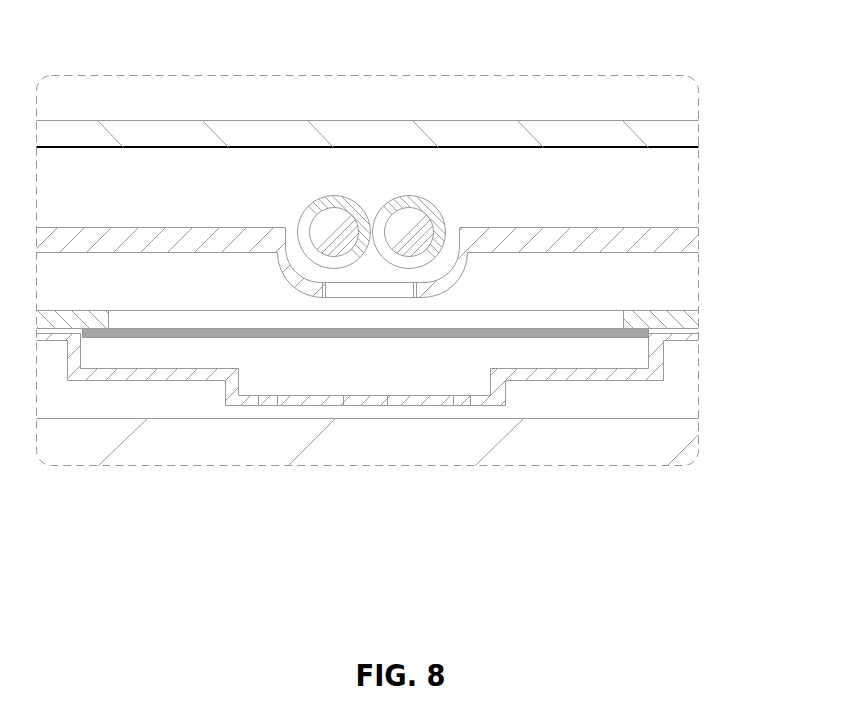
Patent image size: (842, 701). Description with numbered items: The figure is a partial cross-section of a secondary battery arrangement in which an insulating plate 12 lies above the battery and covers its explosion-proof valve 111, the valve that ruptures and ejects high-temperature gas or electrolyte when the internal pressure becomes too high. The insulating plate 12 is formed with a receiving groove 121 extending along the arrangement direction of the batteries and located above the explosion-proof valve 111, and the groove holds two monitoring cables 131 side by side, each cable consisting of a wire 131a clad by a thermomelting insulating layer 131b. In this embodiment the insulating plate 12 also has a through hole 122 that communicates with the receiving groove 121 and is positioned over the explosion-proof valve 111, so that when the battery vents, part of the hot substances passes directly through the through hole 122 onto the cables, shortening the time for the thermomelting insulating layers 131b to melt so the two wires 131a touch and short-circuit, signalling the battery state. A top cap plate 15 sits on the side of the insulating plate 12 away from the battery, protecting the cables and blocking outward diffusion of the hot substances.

The top cap plate 15 is at (577, 135).
The insulating plate 12 is at (577, 235).
The explosion-proof valve 111 is at (546, 330).
The receiving groove 121 is at (373, 265).
The through hole 122 is at (371, 288).
The monitoring cable 131 is at (380, 389).
The wire 131a is at (333, 232).
The thermomelting insulating layer 131b is at (307, 250).